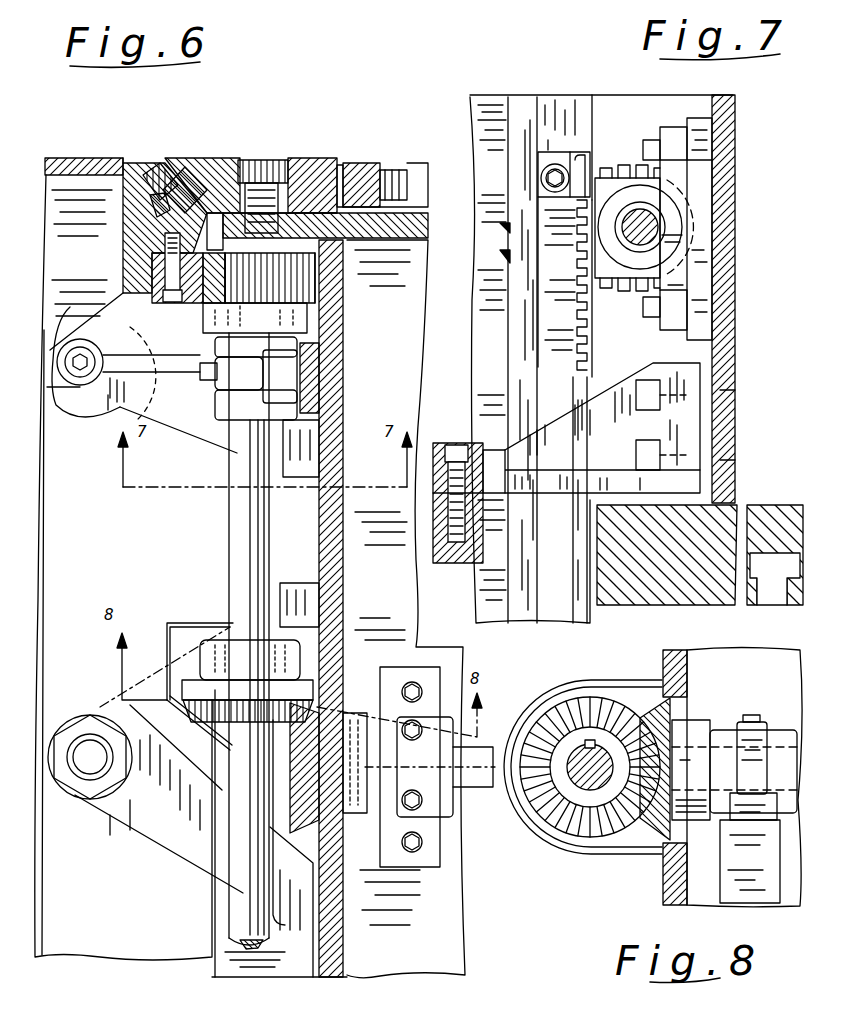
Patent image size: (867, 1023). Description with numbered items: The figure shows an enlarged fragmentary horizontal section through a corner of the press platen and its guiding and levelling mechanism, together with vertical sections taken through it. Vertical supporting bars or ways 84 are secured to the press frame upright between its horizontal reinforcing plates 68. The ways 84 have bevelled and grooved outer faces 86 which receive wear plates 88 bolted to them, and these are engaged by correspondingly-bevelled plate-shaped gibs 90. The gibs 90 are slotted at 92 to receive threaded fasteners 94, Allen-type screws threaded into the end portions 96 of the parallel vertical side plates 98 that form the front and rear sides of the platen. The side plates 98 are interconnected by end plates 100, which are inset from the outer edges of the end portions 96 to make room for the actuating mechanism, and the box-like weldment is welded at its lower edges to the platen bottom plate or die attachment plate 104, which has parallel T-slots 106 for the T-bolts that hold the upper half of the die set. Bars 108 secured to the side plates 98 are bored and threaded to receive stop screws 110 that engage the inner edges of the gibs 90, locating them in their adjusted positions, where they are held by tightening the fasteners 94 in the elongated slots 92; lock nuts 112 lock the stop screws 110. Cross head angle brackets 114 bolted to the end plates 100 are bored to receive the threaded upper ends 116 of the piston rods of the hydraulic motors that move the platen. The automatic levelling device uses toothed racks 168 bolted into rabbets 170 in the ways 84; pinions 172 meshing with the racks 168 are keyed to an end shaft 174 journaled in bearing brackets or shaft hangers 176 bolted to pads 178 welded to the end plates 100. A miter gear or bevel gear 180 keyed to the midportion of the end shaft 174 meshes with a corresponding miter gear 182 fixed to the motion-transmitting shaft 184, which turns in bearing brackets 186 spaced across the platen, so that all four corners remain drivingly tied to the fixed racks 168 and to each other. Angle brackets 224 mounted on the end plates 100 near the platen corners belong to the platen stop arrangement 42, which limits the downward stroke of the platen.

In FIG. 6, the platen stop arrangement 42 is at (77, 397).
In FIG. 7, the platen stop arrangement 42 is at (450, 443).
In FIG. 6, the horizontal reinforcing plates 68 is at (40, 517).
In FIG. 7, the horizontal reinforcing plates 68 is at (486, 257).
In FIG. 6, the vertical supporting bars or ways 84 is at (110, 160).
In FIG. 7, the vertical supporting bars or ways 84 is at (567, 107).
In FIG. 6, the bevelled and grooved outer faces 86 is at (152, 168).
In FIG. 6, the wear plates 88 is at (175, 168).
In FIG. 6, the gibs 90 is at (215, 162).
In FIG. 6, the slots 92 is at (296, 160).
In FIG. 6, the threaded fasteners 94 is at (262, 160).
In FIG. 6, the end portions 96 is at (331, 185).
In FIG. 6, the platen side plates 98 is at (425, 207).
In FIG. 7, the platen side plates 98 is at (564, 174).
In FIG. 6, the platen end plates 100 is at (340, 322).
In FIG. 7, the platen end plates 100 is at (728, 140).
In FIG. 8, the platen end plates 100 is at (663, 667).
In FIG. 7, the platen bottom plate or die attachment plate 104 is at (640, 603).
In FIG. 7, the T-slots 106 is at (775, 570).
In FIG. 6, the bars 108 is at (306, 180).
In FIG. 6, the stop screws 110 is at (395, 172).
In FIG. 6, the lock nuts 112 is at (365, 165).
In FIG. 6, the cross head angle brackets 114 is at (160, 837).
In FIG. 6, the threaded upper ends 116 is at (87, 743).
In FIG. 6, the toothed racks 168 is at (123, 253).
In FIG. 7, the toothed racks 168 is at (547, 213).
In FIG. 6, the rabbets 170 is at (153, 260).
In FIG. 7, the rabbets 170 is at (540, 323).
In FIG. 6, the pinions 172 is at (317, 297).
In FIG. 7, the pinions 172 is at (690, 160).
In FIG. 6, the end shaft 174 is at (240, 505).
In FIG. 7, the end shaft 174 is at (655, 225).
In FIG. 8, the end shaft 174 is at (600, 785).
In FIG. 6, the bearing brackets or shaft hangers 176 is at (217, 397).
In FIG. 7, the bearing brackets or shaft hangers 176 is at (695, 258).
In FIG. 6, the pads 178 is at (310, 372).
In FIG. 7, the pads 178 is at (682, 225).
In FIG. 6, the miter gear or bevel gear 180 is at (187, 663).
In FIG. 8, the miter gear or bevel gear 180 is at (578, 838).
In FIG. 6, the miter gear 182 is at (330, 705).
In FIG. 8, the miter gear 182 is at (670, 707).
In FIG. 6, the motion-transmitting shaft 184 is at (473, 827).
In FIG. 8, the motion-transmitting shaft 184 is at (773, 720).
In FIG. 8, the bearing brackets 186 is at (760, 718).
In FIG. 7, the angle brackets 224 is at (607, 372).